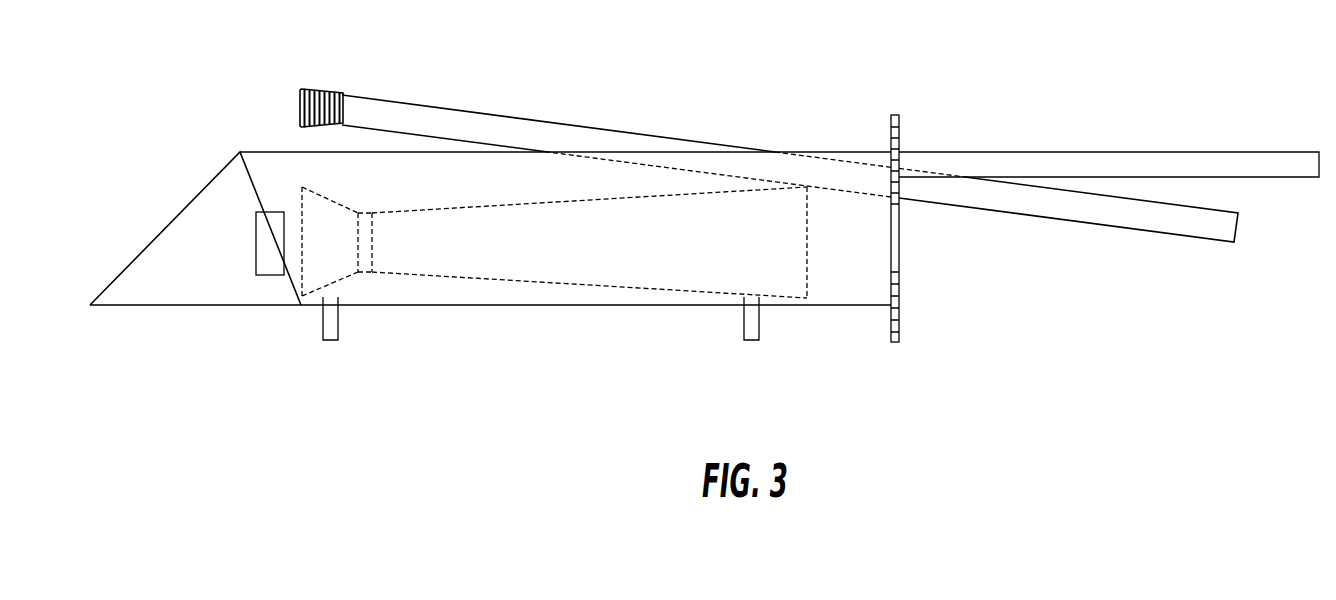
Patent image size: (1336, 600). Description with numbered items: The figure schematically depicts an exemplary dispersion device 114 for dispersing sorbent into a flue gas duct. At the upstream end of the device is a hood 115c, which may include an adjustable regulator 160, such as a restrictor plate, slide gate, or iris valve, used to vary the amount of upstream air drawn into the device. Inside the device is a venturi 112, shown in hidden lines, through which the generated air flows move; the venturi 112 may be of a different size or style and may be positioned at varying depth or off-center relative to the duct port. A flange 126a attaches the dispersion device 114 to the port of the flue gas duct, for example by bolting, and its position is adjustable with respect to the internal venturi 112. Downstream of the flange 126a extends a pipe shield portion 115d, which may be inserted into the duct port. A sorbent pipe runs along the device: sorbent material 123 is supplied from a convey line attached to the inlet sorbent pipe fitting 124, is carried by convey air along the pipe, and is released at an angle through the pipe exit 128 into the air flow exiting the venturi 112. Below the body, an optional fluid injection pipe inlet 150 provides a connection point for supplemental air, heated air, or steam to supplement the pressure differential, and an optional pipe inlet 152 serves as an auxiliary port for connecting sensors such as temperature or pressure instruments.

The venturi 112 is at (446, 192).
The dispersion device 114 is at (675, 50).
The hood 115c is at (163, 217).
The pipe shield portion 115d is at (1076, 142).
The sorbent material 123 is at (288, 102).
The inlet sorbent pipe fitting 124 is at (321, 76).
The flange 126a is at (885, 103).
The pipe exit 128 is at (1203, 249).
The fluid injection pipe inlet 150 is at (343, 354).
The pipe inlet 152 is at (738, 353).
The adjustable regulator 160 is at (244, 259).